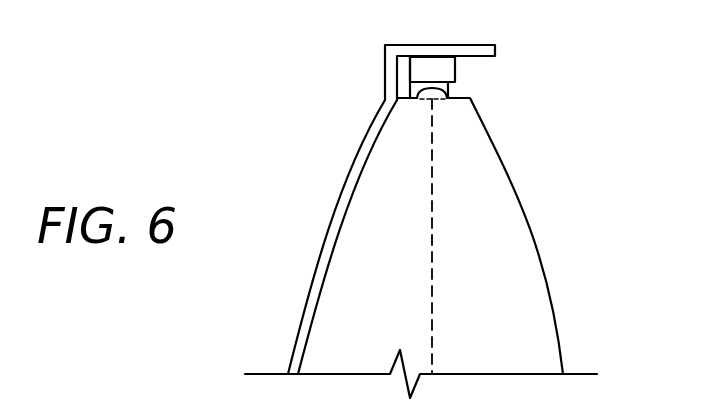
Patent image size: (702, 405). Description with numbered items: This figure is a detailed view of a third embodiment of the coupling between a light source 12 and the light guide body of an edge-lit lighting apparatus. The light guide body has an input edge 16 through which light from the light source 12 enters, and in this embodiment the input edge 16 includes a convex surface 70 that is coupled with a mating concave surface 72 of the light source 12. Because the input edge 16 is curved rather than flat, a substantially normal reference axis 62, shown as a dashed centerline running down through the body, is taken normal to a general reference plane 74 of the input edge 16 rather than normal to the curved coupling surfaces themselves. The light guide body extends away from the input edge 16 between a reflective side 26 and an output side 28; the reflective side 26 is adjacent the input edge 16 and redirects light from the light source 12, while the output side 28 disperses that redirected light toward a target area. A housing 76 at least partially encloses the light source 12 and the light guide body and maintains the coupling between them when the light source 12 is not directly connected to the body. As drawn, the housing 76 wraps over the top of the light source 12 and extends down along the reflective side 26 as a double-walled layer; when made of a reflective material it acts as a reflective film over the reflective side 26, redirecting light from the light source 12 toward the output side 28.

The light source 12 is at (452, 70).
The input edge 16 is at (407, 98).
The reflective side 26 is at (302, 354).
The output side 28 is at (565, 360).
The substantially normal reference axis 62 is at (433, 270).
The convex surface 70 is at (449, 96).
The concave surface 72 is at (447, 92).
The general reference plane 74 is at (398, 89).
The housing 76 is at (347, 180).